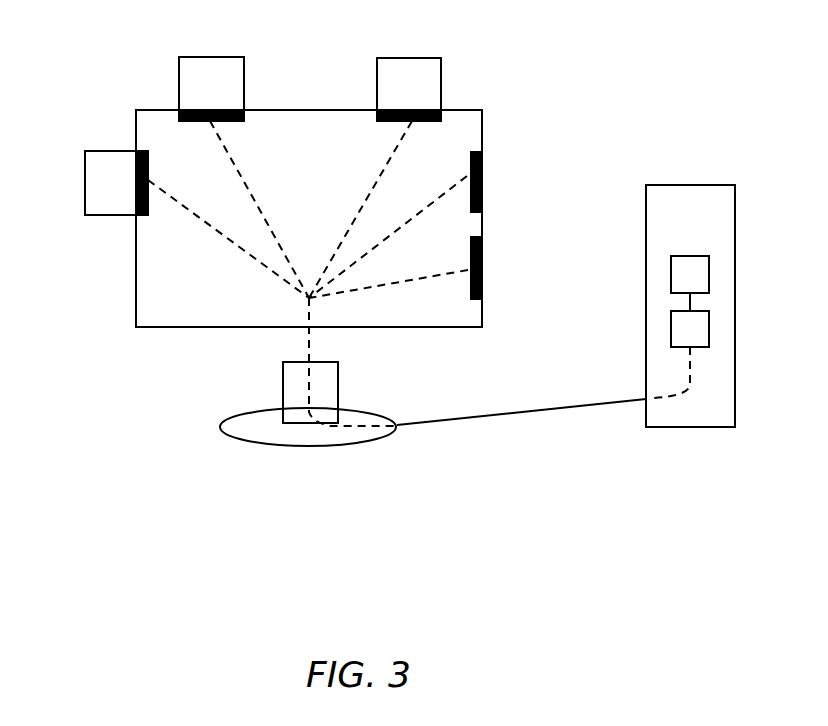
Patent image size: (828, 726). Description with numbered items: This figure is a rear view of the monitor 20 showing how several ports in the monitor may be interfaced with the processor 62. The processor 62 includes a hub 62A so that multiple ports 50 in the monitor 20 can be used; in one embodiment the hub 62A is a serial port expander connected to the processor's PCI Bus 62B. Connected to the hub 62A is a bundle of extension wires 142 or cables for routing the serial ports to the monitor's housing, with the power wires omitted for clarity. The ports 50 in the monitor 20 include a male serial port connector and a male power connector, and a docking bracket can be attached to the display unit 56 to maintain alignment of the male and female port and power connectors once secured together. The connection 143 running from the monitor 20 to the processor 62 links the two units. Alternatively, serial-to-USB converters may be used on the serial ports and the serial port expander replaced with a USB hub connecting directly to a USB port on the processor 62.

The monitor 20 is at (168, 348).
The ports 50 is at (483, 180).
The display unit 56 is at (208, 57).
The processor 62 is at (729, 323).
The hub 62A is at (710, 327).
The PCI Bus 62B is at (710, 281).
The extension wires 142 is at (230, 241).
The cable 143 is at (479, 418).